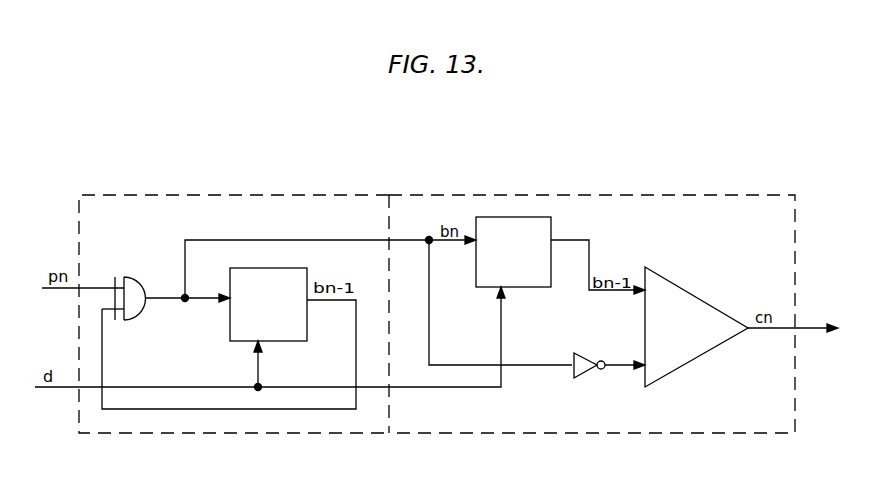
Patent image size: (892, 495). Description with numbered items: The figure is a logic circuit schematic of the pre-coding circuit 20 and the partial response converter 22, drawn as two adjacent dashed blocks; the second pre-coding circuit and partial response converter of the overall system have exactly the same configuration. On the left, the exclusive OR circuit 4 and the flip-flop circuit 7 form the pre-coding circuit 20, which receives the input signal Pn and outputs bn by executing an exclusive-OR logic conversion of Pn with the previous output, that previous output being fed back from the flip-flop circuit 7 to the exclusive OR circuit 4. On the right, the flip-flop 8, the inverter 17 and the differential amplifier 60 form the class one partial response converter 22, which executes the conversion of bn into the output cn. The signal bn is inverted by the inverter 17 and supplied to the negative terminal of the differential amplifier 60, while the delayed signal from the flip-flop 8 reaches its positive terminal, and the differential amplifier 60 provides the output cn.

The pre-coding circuit 20 is at (318, 205).
The partial response converter 22 is at (618, 216).
The exclusive OR circuit 4 is at (136, 314).
The flip-flop circuit 7 is at (266, 327).
The flip-flop 8 is at (512, 260).
The inverter 17 is at (585, 376).
The differential amplifier 60 is at (690, 292).